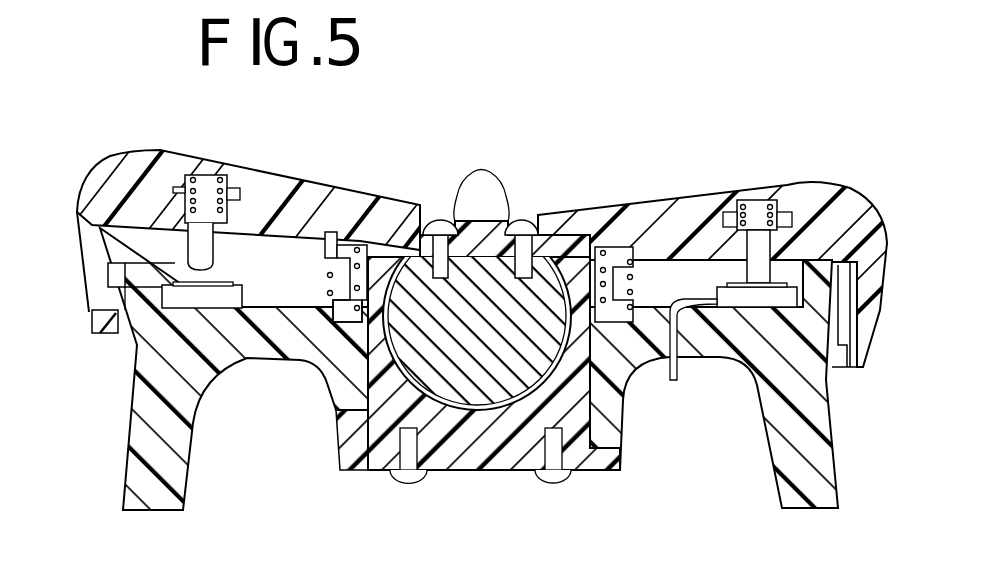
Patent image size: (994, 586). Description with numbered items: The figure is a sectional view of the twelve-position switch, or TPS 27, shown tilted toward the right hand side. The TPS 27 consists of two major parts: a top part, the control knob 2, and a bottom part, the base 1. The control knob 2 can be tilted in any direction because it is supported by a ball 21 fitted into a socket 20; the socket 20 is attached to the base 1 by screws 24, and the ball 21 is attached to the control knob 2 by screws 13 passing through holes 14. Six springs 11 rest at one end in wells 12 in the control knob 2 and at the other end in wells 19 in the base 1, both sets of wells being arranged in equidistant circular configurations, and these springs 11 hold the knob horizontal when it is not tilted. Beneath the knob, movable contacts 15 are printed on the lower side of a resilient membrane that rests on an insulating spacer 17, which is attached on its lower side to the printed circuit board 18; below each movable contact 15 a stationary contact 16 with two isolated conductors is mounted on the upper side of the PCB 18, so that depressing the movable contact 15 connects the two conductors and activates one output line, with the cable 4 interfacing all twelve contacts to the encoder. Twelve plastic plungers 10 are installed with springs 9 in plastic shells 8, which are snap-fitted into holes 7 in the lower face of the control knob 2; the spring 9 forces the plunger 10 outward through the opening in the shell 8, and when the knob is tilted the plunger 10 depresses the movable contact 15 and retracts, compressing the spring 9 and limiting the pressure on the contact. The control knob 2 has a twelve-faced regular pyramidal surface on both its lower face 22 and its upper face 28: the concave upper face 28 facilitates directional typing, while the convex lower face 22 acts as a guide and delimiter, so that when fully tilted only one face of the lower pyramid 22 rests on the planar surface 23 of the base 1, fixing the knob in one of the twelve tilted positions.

The base 1 is at (157, 447).
The control knob 2 is at (270, 200).
The cable 4 is at (678, 380).
The holes 7 is at (785, 258).
The plastic shells 8 is at (182, 188).
The springs 9 is at (221, 176).
The plastic plungers 10 is at (755, 262).
The springs 11 is at (336, 250).
The wells 12 is at (369, 245).
The screws 13 is at (527, 219).
The holes 14 is at (466, 210).
The movable contacts 15 is at (92, 236).
The stationary contact 16 is at (93, 312).
The insulating spacer 17 is at (108, 284).
The printed circuit board 18 is at (203, 300).
The wells 19 is at (352, 325).
The socket 20 is at (382, 392).
The ball 21 is at (622, 470).
The lower face 22 is at (663, 258).
The planar surface 23 is at (840, 283).
The screws 24 is at (533, 477).
The TPS 27 is at (815, 487).
The upper face 28 is at (733, 192).